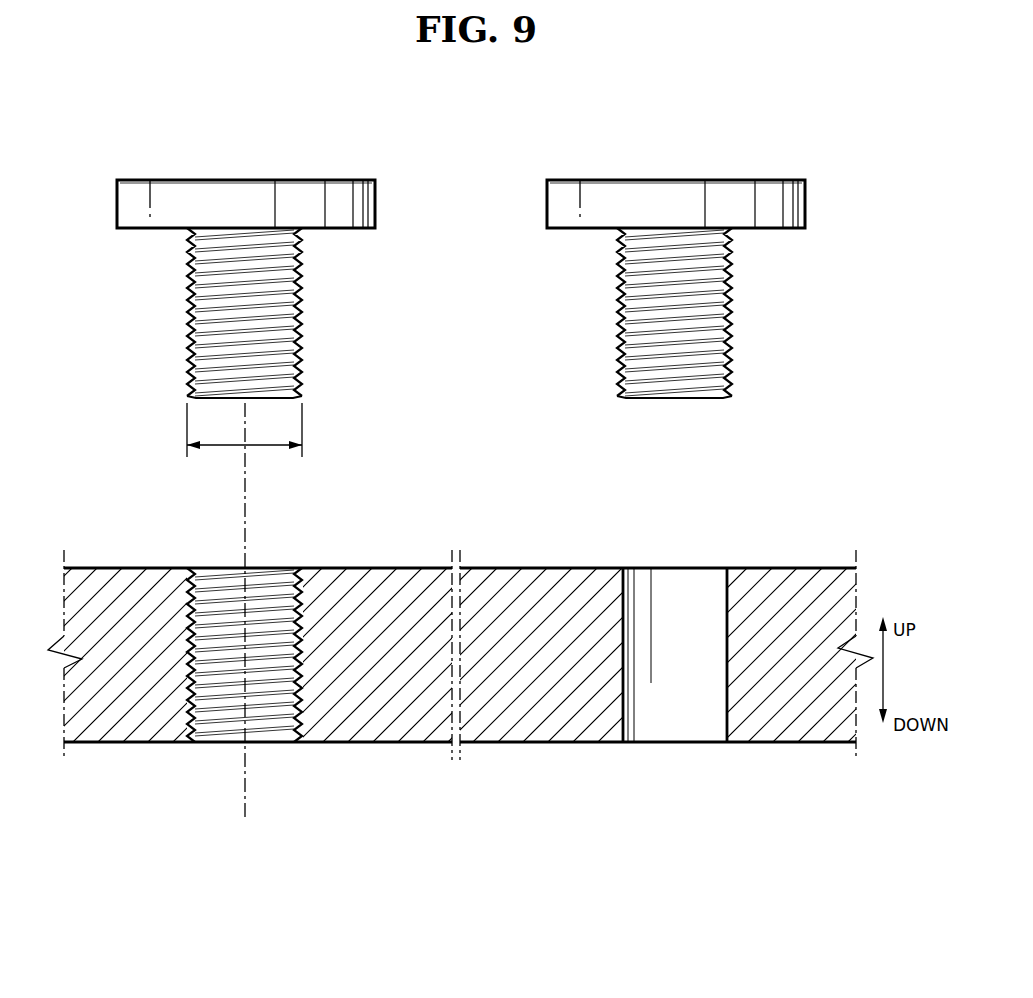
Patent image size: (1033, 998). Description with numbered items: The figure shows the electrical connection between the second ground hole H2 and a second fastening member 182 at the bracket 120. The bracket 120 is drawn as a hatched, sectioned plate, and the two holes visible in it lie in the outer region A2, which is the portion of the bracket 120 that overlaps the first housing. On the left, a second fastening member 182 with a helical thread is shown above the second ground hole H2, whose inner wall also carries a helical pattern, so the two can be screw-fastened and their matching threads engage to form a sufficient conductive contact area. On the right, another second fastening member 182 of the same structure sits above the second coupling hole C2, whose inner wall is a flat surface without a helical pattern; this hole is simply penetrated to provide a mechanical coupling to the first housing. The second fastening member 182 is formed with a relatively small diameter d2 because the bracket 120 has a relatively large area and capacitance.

The second fastening member 182 is at (142, 292).
The bracket 120 is at (110, 552).
The second ground hole H2 is at (206, 768).
The second coupling hole C2 is at (677, 768).
The outer region A2 is at (380, 583).
The diameter of the second fastening member d2 is at (244, 440).